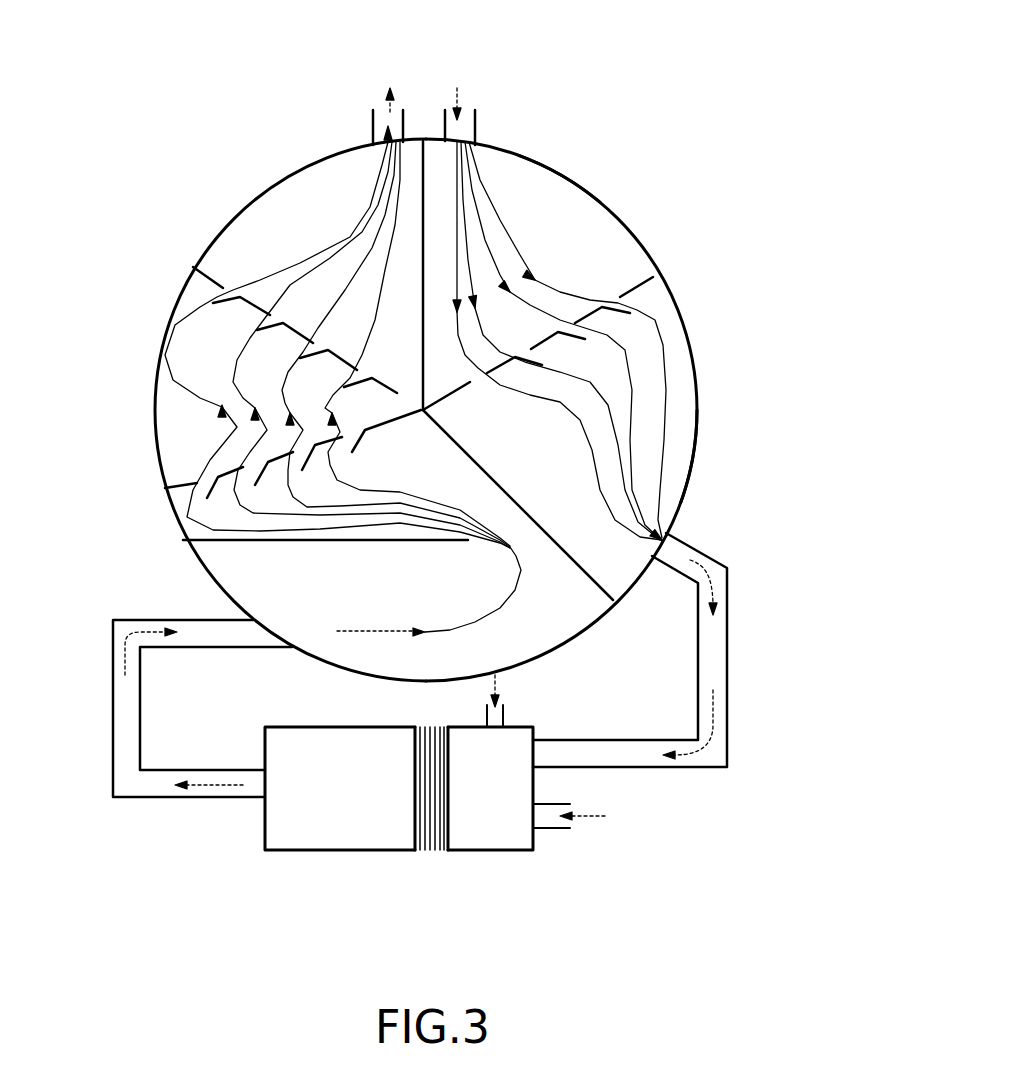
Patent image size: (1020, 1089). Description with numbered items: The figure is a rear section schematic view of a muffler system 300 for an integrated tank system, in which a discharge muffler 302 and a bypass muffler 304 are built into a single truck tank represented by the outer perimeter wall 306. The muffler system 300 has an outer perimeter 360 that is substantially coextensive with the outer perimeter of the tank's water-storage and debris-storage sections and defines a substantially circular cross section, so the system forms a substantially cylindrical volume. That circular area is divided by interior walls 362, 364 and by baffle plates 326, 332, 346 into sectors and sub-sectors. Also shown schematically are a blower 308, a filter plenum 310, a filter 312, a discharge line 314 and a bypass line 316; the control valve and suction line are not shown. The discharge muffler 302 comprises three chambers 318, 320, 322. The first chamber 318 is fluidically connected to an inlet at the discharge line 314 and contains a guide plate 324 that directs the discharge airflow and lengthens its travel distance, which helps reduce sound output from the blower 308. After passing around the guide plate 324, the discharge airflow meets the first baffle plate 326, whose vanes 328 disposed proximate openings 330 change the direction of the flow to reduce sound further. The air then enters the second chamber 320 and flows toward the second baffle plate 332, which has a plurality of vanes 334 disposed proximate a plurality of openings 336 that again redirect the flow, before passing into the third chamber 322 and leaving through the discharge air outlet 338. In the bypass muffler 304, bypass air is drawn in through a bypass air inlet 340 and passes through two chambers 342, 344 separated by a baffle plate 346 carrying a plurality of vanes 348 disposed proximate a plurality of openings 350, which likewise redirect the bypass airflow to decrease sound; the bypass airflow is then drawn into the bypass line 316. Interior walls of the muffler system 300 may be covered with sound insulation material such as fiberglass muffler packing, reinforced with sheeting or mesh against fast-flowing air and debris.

The muffler system 300 is at (650, 70).
The discharge muffler 302 is at (128, 379).
The bypass muffler 304 is at (716, 390).
The outer perimeter wall 306 is at (523, 157).
The blower 308 is at (358, 798).
The filter plenum 310 is at (510, 798).
The filter 312 is at (428, 850).
The discharge line 314 is at (118, 718).
The bypass line 316 is at (722, 695).
The first chamber 318 is at (416, 586).
The second chamber 320 is at (201, 446).
The third chamber 322 is at (336, 209).
The guide plate 324 is at (197, 542).
The first baffle plate 326 is at (178, 490).
The vanes 328 is at (358, 440).
The openings 330 is at (364, 413).
The second baffle plate 332 is at (217, 287).
The vanes 334 is at (227, 303).
The openings 336 is at (232, 284).
The discharge air outlet 338 is at (373, 120).
The bypass air inlet 340 is at (475, 118).
The first bypass chamber 342 is at (566, 236).
The second bypass chamber 344 is at (563, 473).
The baffle plate 346 is at (638, 275).
The vanes 348 is at (484, 390).
The openings 350 is at (453, 393).
The outer perimeter 360 is at (694, 440).
The interior wall 362 is at (577, 568).
The interior wall 364 is at (422, 287).